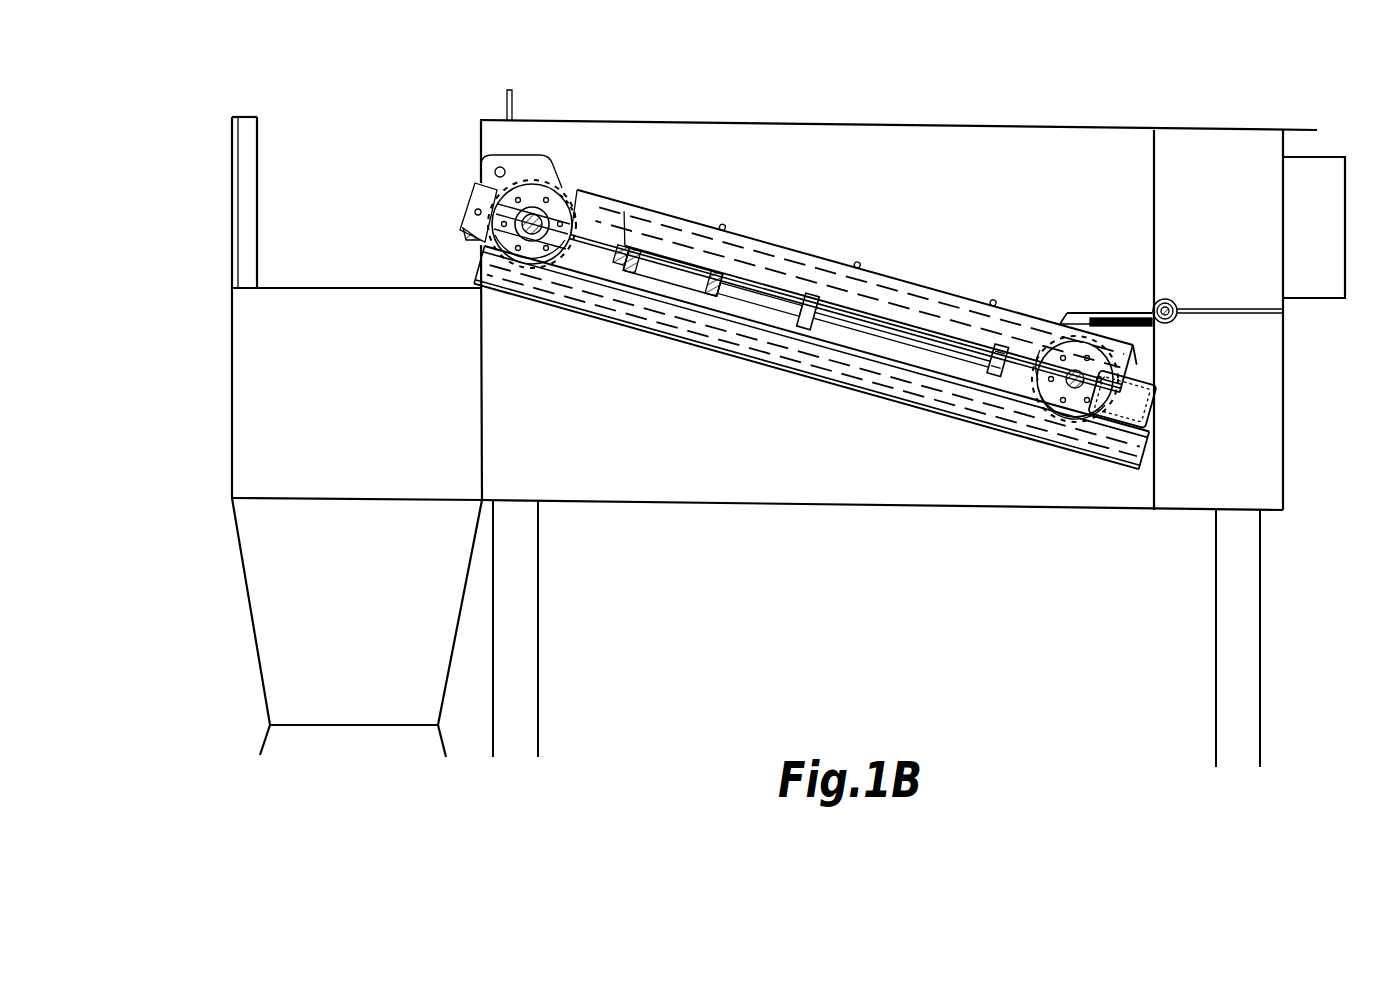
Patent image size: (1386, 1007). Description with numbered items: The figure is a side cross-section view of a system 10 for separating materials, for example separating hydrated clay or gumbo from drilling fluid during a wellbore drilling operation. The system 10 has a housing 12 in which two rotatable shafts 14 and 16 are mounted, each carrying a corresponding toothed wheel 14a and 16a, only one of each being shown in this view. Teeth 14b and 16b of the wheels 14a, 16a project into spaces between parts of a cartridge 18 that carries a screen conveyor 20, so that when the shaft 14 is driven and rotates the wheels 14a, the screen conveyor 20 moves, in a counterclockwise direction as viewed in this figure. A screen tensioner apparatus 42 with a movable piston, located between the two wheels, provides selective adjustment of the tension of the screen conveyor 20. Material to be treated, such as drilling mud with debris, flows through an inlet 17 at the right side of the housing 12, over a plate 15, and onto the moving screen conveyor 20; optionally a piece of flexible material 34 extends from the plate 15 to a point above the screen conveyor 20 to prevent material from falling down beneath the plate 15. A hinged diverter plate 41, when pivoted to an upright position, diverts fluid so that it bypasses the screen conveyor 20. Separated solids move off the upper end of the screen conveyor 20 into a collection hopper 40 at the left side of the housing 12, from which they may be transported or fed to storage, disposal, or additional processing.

The system 10 is at (455, 145).
The housing 12 is at (855, 119).
The rotatable shaft 14 is at (533, 207).
The toothed wheel 14a is at (543, 262).
The teeth 14b is at (587, 247).
The plate 15 is at (1108, 312).
The rotatable shaft 16 is at (1078, 388).
The toothed wheel 16a is at (1065, 425).
The teeth 16b is at (1032, 352).
The inlet 17 is at (1305, 195).
The cartridge 18 is at (832, 240).
The screen conveyor 20 is at (703, 235).
The piece of flexible material 34 is at (1082, 313).
The collection hopper 40 is at (232, 300).
The hinged diverter plate 41 is at (1222, 314).
The screen tensioner apparatus 42 is at (703, 318).